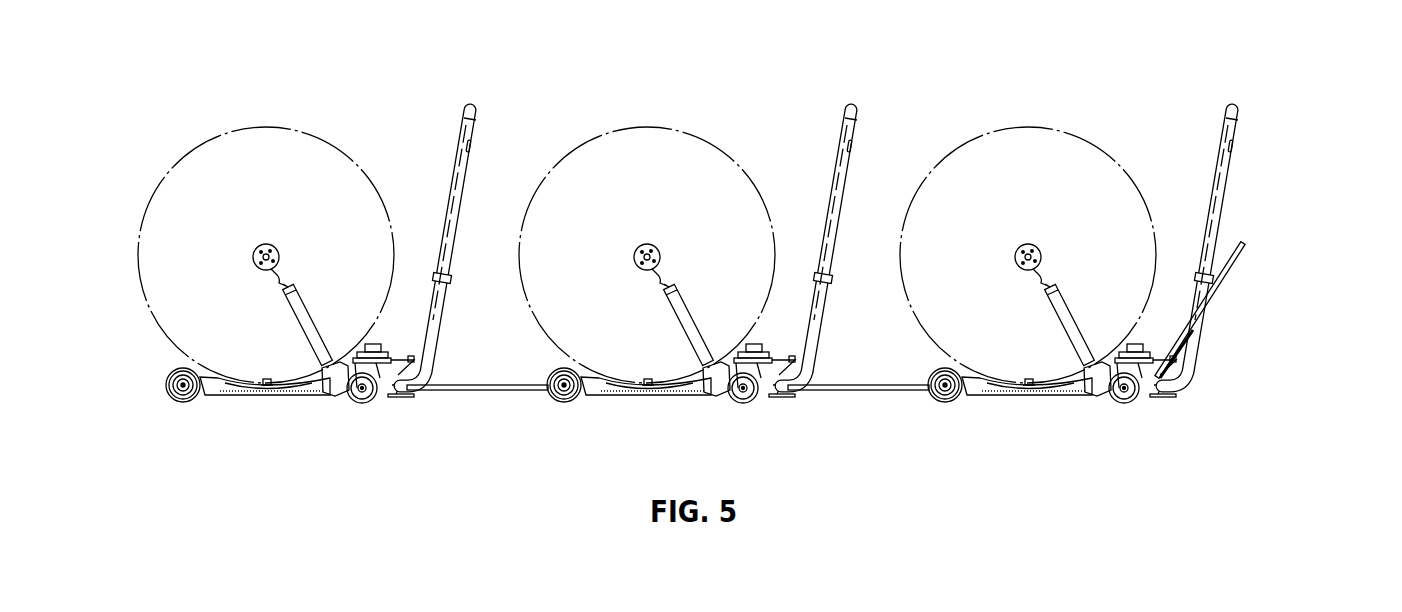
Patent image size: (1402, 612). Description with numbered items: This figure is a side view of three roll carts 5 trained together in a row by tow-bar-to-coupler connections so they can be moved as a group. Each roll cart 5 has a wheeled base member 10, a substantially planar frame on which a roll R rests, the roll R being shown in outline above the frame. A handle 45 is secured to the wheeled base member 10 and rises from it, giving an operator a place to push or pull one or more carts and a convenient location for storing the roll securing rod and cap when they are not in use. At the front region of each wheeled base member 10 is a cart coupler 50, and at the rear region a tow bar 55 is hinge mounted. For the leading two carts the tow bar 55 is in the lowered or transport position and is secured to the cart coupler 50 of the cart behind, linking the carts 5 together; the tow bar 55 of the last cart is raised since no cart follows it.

The roll cart 5 is at (507, 63).
The wheeled base member 10 is at (210, 395).
The handle 45 is at (478, 110).
The cart coupler 50 is at (168, 380).
The tow bar 55 is at (476, 385).
The roll R is at (232, 130).